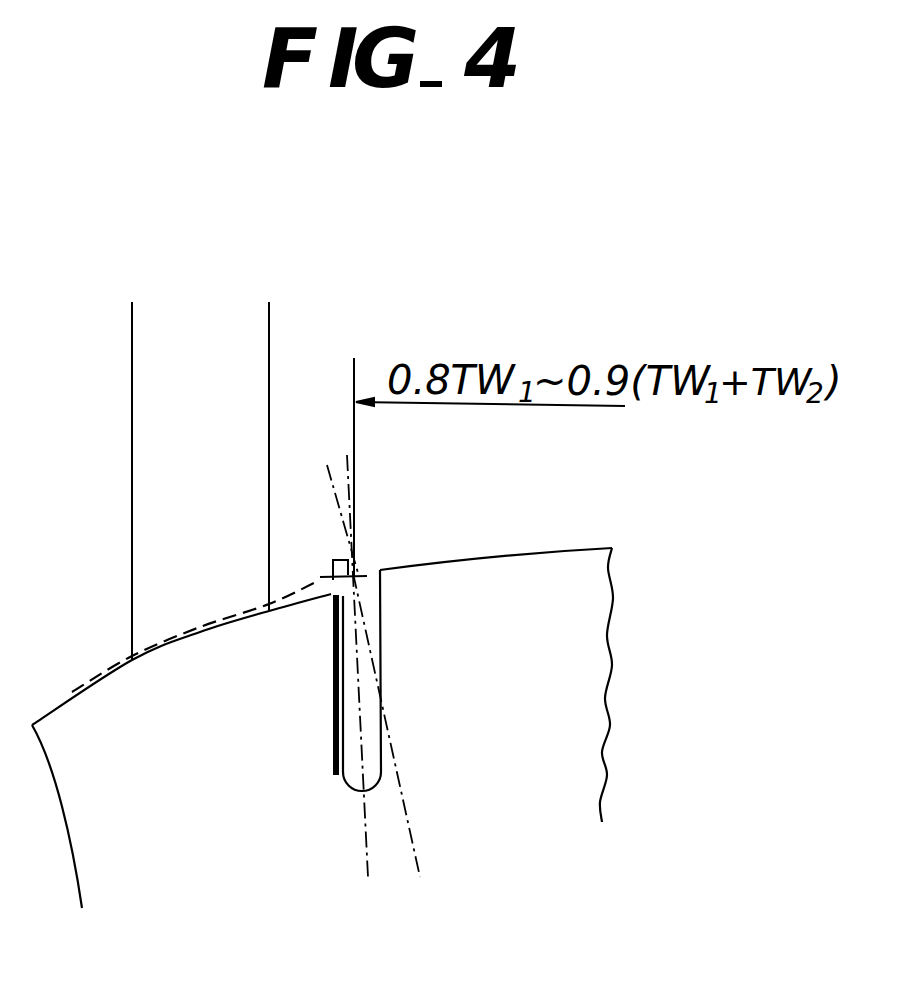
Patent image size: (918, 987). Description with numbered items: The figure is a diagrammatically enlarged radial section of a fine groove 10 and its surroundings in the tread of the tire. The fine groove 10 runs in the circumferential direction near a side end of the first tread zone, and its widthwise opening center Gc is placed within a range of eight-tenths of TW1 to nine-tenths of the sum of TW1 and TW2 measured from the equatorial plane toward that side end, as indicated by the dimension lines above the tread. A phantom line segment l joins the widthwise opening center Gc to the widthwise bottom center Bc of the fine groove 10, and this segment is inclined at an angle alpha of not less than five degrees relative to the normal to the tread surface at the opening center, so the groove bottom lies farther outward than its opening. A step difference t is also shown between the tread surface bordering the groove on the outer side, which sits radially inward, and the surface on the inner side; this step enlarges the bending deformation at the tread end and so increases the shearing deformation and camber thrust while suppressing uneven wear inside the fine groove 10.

The fine groove 10 is at (350, 763).
The first tread zone width TW1 is at (271, 323).
The second tread zone width TW2 is at (267, 322).
The widthwise opening center Gc is at (352, 573).
The widthwise bottom center Bc is at (365, 790).
The inclination angle alpha is at (413, 847).
The step difference t is at (305, 542).
The phantom line segment l is at (342, 698).